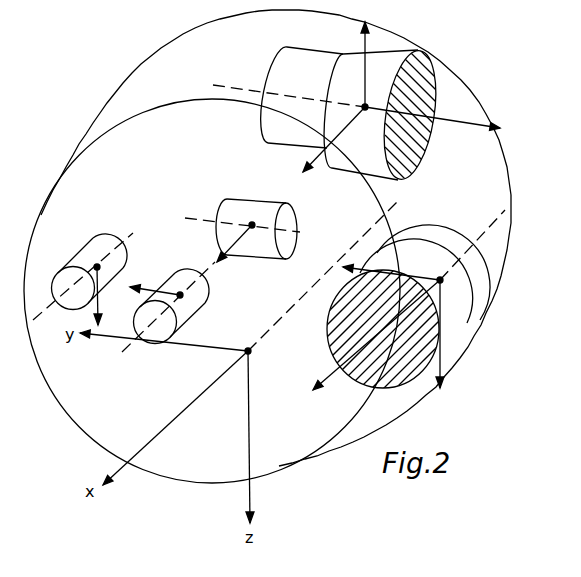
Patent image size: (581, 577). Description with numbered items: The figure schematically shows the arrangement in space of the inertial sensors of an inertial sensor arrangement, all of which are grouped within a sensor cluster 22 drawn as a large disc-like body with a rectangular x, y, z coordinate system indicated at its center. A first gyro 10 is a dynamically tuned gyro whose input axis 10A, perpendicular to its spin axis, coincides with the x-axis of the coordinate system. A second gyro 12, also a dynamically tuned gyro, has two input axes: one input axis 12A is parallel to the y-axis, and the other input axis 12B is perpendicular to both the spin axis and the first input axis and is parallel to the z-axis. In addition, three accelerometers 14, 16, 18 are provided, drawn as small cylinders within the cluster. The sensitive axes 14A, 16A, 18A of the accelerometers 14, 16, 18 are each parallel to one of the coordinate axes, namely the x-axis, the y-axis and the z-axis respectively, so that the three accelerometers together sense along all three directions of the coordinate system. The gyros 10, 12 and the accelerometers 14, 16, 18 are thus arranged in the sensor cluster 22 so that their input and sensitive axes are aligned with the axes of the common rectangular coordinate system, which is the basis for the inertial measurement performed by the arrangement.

The first gyro 10 is at (393, 62).
The input axis 10A is at (321, 152).
The second gyro 12 is at (467, 321).
The input axis 12A is at (400, 268).
The input axis 12B is at (443, 365).
The accelerometer 14 is at (260, 240).
The sensitive axis 14A is at (213, 233).
The accelerometer 16 is at (196, 297).
The sensitive axis 16A is at (157, 289).
The accelerometer 18 is at (88, 258).
The sensitive axis 18A is at (100, 275).
The sensor cluster 22 is at (222, 156).